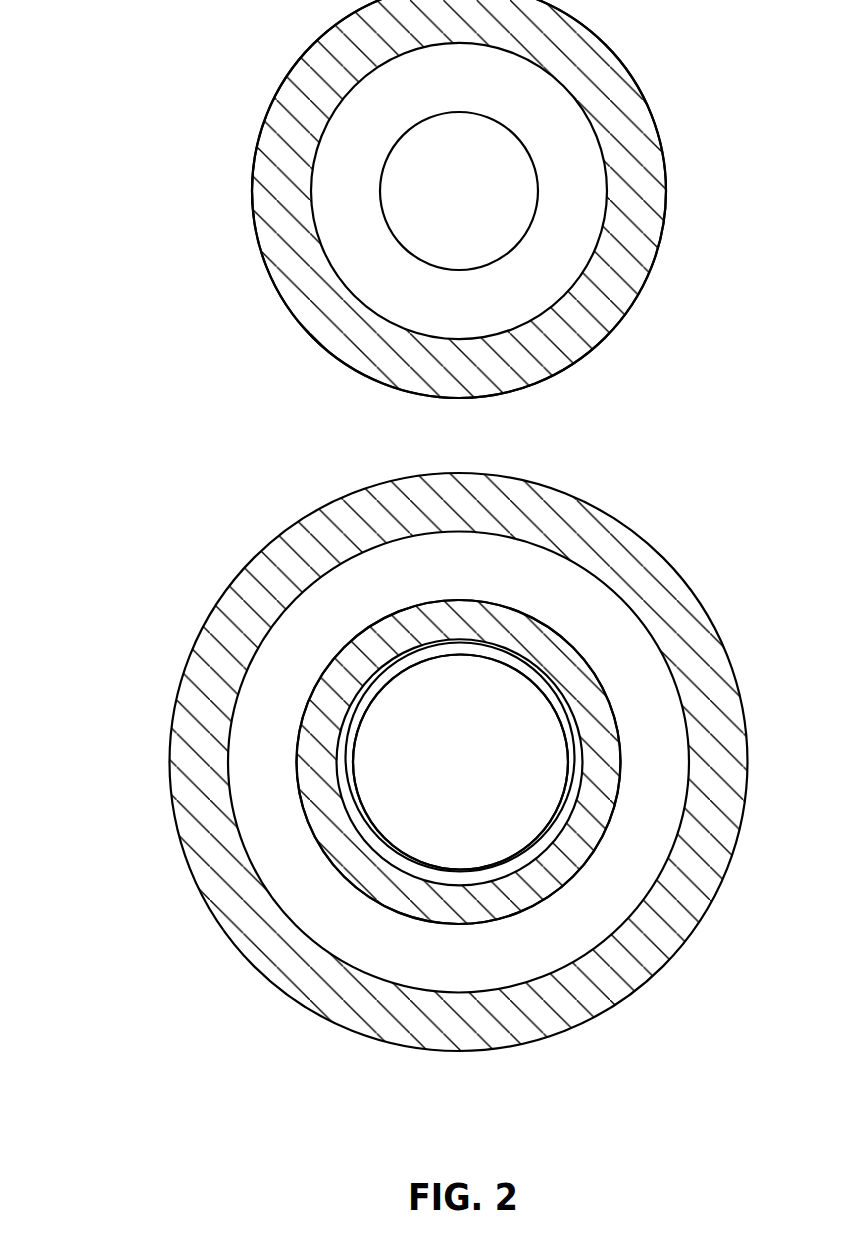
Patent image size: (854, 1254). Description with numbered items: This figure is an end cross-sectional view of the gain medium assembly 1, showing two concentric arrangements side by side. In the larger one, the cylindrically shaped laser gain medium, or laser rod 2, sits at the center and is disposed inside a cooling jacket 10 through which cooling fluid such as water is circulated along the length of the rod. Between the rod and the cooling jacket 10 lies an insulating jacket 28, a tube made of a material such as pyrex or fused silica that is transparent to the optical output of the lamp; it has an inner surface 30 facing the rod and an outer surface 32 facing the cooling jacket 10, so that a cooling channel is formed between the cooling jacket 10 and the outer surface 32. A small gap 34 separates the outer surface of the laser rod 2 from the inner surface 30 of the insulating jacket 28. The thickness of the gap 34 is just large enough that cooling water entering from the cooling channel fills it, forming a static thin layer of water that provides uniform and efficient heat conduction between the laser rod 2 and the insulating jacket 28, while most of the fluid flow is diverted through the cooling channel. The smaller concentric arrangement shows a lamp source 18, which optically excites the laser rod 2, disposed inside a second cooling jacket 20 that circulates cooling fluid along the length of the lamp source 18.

The gain medium assembly 1 is at (95, 282).
The second cooling jacket 20 is at (637, 117).
The lamp source 18 is at (448, 210).
The cooling jacket 10 is at (660, 570).
The insulating jacket 28 is at (605, 780).
The inner surface 30 is at (595, 671).
The outer surface 32 is at (580, 735).
The gap 34 is at (370, 893).
The laser gain medium 2 is at (453, 762).